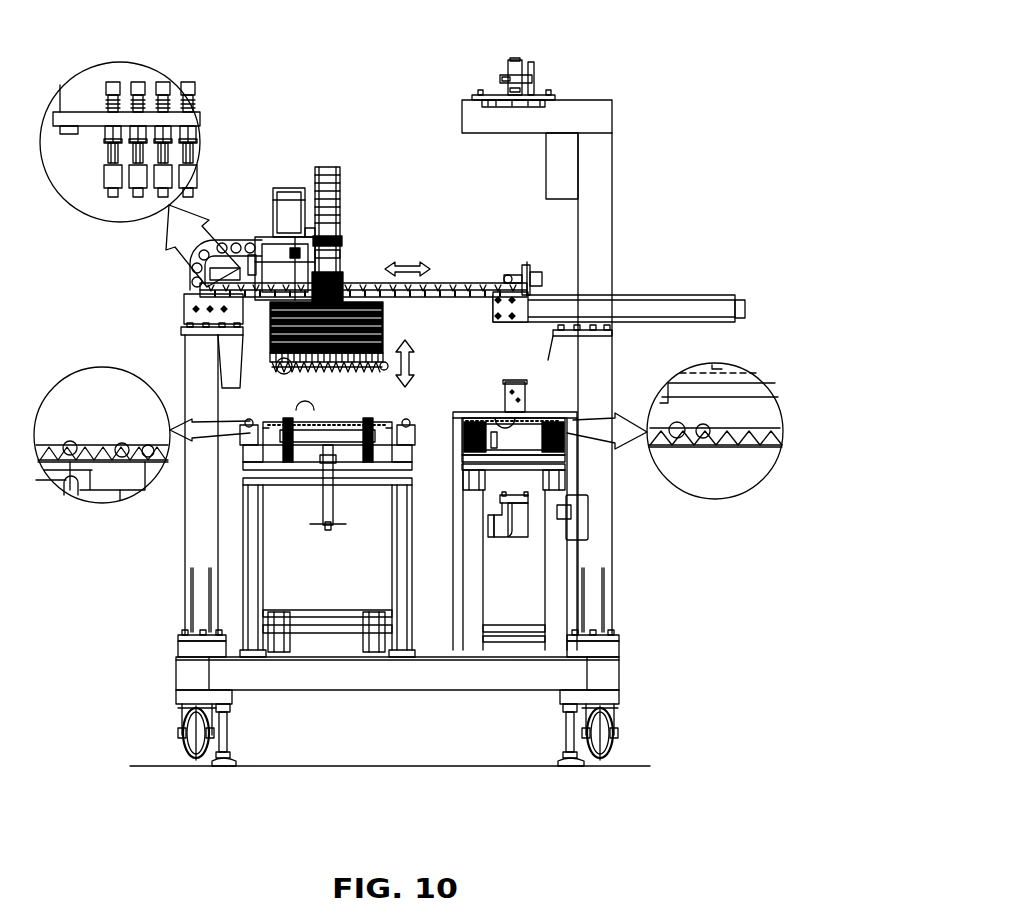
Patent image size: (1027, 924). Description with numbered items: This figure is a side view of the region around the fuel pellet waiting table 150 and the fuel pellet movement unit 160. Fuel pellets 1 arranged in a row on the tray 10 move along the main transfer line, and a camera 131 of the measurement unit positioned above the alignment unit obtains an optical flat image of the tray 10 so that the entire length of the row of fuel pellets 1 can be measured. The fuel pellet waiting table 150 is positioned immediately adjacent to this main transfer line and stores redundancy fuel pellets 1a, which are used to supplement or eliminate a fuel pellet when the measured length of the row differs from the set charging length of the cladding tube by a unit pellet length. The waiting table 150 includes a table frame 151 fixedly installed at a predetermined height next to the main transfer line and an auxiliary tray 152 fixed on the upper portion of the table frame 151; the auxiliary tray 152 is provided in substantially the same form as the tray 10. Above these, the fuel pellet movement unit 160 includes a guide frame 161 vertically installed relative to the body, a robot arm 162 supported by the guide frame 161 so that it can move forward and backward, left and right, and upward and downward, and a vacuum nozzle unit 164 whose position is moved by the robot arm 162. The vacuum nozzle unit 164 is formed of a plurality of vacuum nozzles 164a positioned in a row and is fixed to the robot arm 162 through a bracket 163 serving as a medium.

The fuel pellets 1 is at (677, 438).
The redundancy fuel pellets 1a is at (70, 456).
The tray 10 is at (730, 447).
The camera 131 is at (522, 58).
The fuel pellet waiting table 150 is at (258, 402).
The table frame 151 is at (245, 578).
The auxiliary tray 152 is at (108, 446).
The fuel pellet movement unit 160 is at (360, 242).
The guide frame 161 is at (186, 308).
The robot arm 162 is at (343, 282).
The bracket 163 is at (97, 113).
The vacuum nozzle unit 164 is at (84, 185).
The vacuum nozzles 164a is at (113, 197).